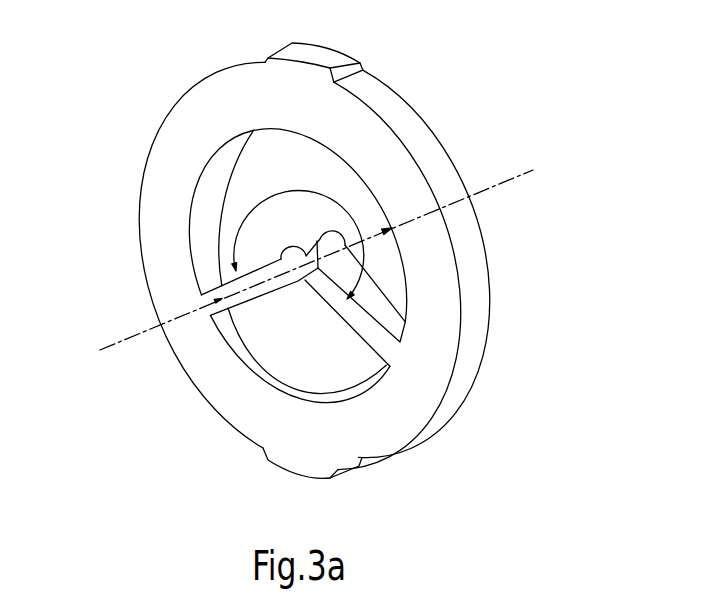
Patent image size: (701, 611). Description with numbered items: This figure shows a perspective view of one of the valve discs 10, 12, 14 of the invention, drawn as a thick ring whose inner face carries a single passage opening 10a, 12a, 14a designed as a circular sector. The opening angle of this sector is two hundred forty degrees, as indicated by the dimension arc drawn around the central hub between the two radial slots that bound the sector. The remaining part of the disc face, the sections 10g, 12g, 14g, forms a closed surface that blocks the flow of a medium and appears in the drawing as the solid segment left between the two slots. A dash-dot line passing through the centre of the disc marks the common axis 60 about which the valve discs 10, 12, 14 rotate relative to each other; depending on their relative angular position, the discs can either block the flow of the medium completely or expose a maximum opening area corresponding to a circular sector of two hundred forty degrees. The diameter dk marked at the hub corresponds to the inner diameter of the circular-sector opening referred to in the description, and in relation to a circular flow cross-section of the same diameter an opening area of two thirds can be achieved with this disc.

The valve disc 10 is at (331, 260).
The valve disc 12 is at (331, 260).
The valve disc 14 is at (350, 122).
The passage opening 10a is at (404, 225).
The passage opening 12a is at (404, 225).
The passage opening 14a is at (348, 187).
The section of the valve disc 10g is at (381, 392).
The section of the valve disc 12g is at (381, 392).
The section of the valve disc 14g is at (350, 377).
The common axis 60 is at (100, 352).
The diameter of hub bore dk is at (272, 283).